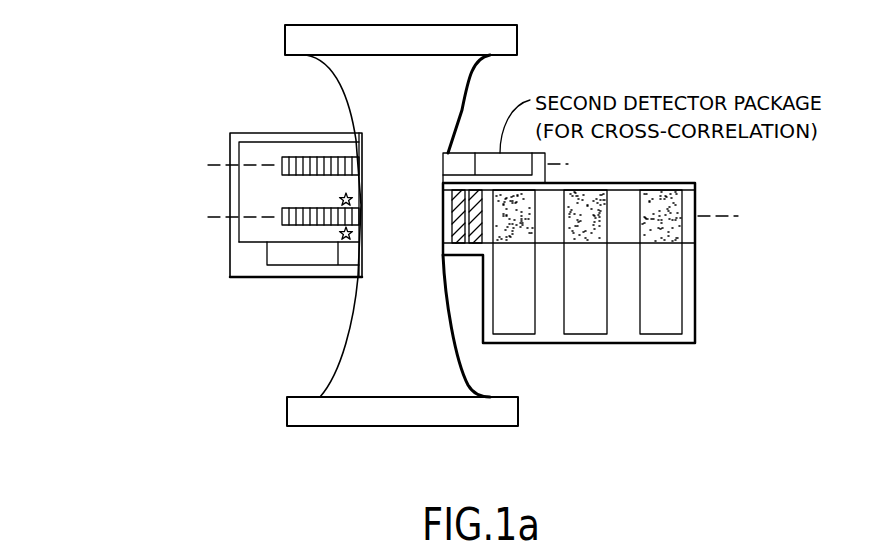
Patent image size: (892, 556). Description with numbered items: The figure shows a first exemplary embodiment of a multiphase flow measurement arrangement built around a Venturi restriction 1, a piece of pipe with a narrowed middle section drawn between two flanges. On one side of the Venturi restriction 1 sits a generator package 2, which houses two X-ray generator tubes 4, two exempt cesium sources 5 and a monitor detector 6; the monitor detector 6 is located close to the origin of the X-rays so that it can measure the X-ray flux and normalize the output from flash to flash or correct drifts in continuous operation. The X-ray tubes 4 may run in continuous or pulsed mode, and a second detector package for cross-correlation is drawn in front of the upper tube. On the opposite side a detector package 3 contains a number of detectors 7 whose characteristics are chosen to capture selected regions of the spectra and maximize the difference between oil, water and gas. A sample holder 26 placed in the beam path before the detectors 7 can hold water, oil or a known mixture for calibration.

The Venturi restriction 1 is at (458, 108).
The generator package 2 is at (303, 133).
The detector package 3 is at (695, 287).
The X-ray generator tubes 4 is at (282, 215).
The 137Cs sources 5 is at (341, 238).
The monitor detector 6 is at (267, 252).
The detectors 7 is at (535, 297).
The sample holder 26 is at (467, 245).